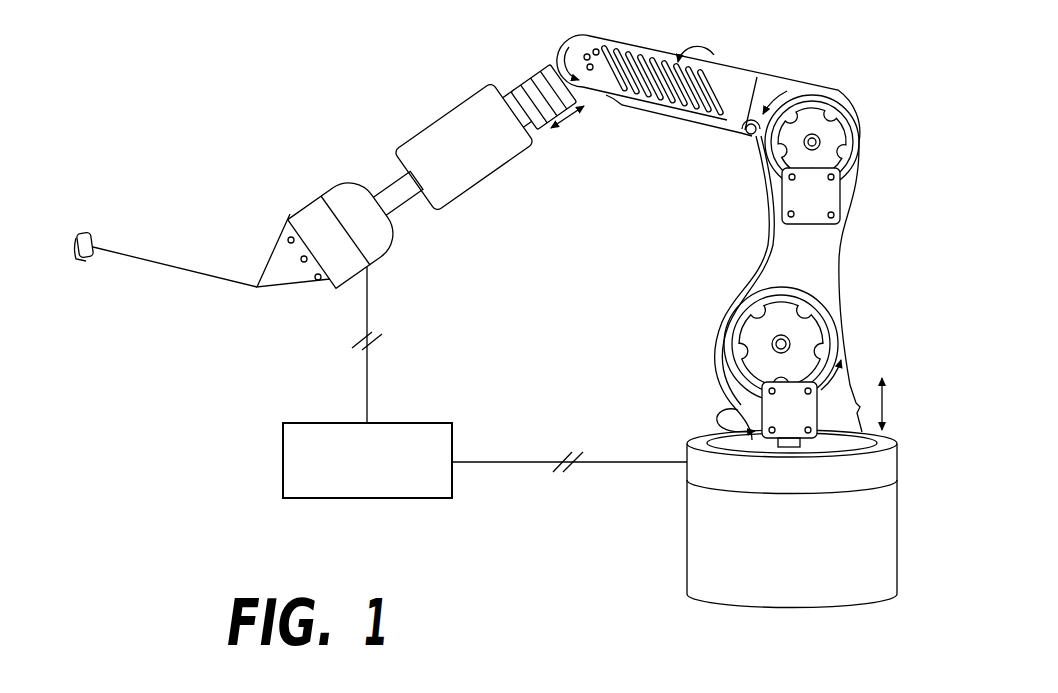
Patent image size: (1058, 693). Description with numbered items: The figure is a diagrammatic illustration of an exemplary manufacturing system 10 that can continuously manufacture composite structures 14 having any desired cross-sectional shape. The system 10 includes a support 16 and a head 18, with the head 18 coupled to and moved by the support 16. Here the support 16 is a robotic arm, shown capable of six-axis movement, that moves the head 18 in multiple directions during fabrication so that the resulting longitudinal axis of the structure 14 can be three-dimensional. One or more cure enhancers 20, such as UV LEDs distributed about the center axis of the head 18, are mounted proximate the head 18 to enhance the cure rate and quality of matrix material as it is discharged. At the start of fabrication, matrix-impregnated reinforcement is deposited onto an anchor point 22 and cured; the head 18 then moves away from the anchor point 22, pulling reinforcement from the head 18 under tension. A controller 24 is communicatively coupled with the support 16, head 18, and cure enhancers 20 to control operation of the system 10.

The system 10 is at (160, 50).
The composite structure 14 is at (183, 270).
The support 16 is at (812, 255).
The head 18 is at (377, 242).
The cure enhancer 20 is at (300, 265).
The anchor point 22 is at (88, 262).
The controller 24 is at (378, 472).